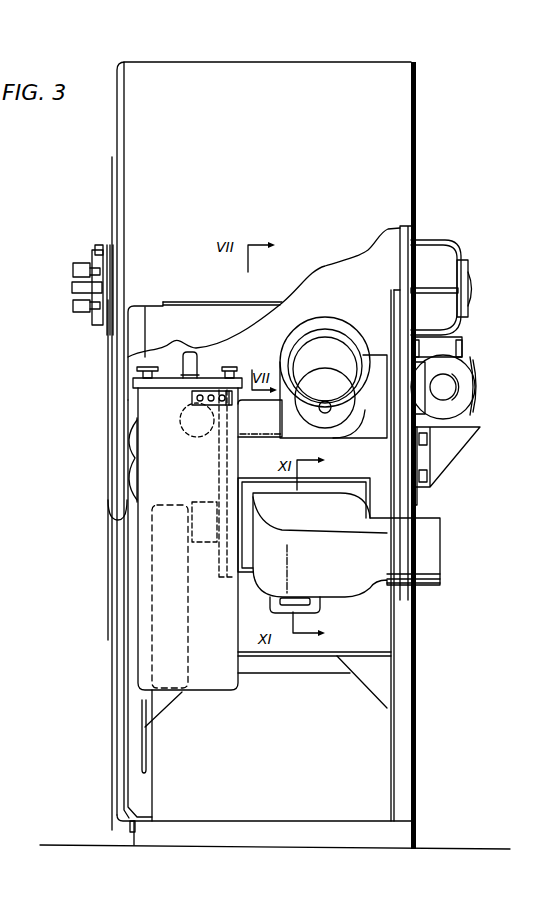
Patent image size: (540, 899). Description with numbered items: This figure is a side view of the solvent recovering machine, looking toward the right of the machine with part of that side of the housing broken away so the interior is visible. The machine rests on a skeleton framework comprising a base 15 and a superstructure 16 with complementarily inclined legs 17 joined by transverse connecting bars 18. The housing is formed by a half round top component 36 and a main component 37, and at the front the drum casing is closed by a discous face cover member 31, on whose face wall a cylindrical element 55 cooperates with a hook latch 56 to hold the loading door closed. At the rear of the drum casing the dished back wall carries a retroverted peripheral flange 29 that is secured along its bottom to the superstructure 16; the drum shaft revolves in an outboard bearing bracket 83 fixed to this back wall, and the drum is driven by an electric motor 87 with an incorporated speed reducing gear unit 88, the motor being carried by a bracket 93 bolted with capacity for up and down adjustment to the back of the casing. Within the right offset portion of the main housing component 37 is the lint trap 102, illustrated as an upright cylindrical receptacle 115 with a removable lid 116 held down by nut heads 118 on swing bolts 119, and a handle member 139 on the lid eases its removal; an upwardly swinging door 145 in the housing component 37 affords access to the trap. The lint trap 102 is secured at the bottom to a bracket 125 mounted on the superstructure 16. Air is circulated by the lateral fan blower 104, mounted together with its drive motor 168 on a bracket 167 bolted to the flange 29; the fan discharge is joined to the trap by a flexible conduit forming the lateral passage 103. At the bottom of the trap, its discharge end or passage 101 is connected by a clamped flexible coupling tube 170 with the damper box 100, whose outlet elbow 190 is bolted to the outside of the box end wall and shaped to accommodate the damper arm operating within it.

The base 15 is at (259, 821).
The superstructure 16 is at (373, 722).
The inclined legs 17 is at (405, 622).
The transverse connecting bars 18 is at (283, 654).
The retroverted peripheral flange 29 is at (405, 272).
The face cover member 31 is at (116, 133).
The half round top component 36 is at (137, 166).
The main component of the machine housing 37 is at (130, 346).
The cylindrical element 55 is at (80, 266).
The hook latch 56 is at (74, 289).
The outboard bearing bracket 83 is at (444, 263).
The electric motor 87 is at (466, 372).
The speed reducing gear unit 88 is at (445, 347).
The bracket 93 is at (450, 452).
The damper box 100 is at (345, 483).
The passage 101 is at (177, 505).
The lint trap 102 is at (132, 456).
The lateral passage 103 is at (232, 443).
The lateral fan blower 104 is at (327, 322).
The upright cylindrical receptacle 115 is at (143, 522).
The removable lid 116 is at (168, 386).
The nut heads 118 is at (151, 372).
The swing bolts 119 is at (237, 414).
The bracket 125 is at (148, 742).
The handle member 139 is at (187, 350).
The upwardly swinging door 145 is at (224, 306).
The bracket 167 is at (399, 313).
The drive motor 168 is at (325, 398).
The clamped flexible coupling tube 170 is at (205, 546).
The outlet elbow 190 is at (346, 553).